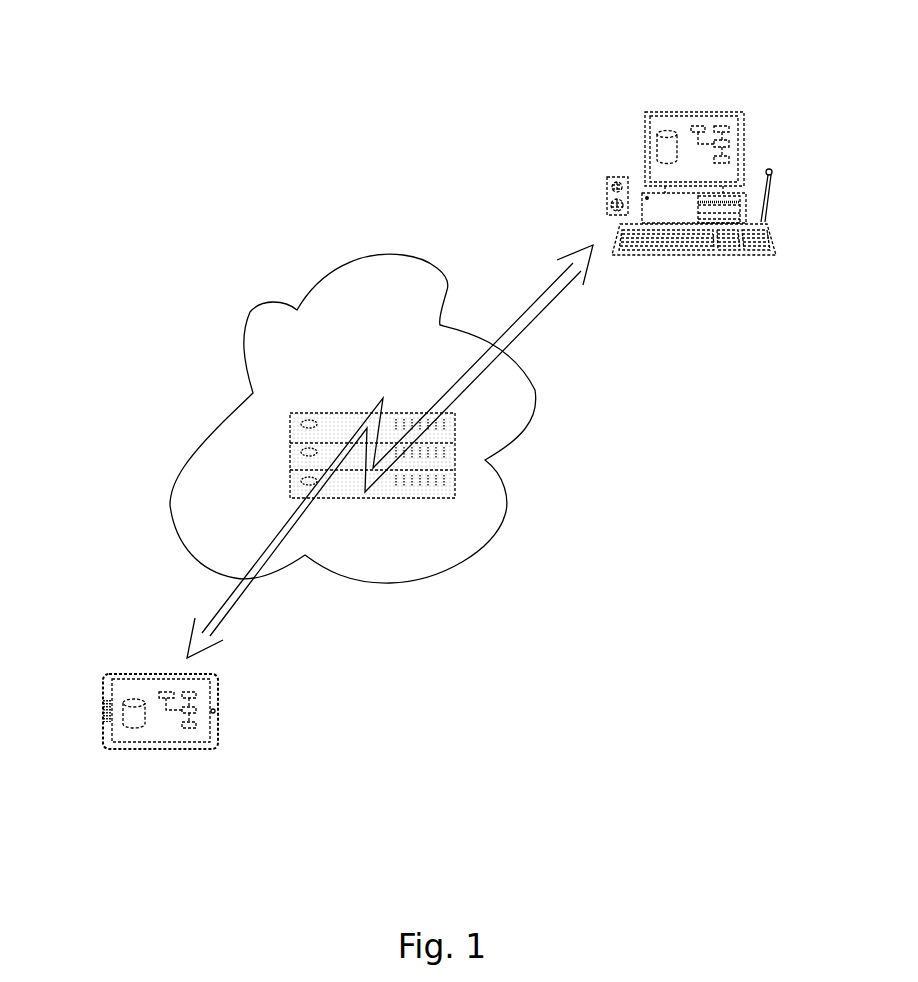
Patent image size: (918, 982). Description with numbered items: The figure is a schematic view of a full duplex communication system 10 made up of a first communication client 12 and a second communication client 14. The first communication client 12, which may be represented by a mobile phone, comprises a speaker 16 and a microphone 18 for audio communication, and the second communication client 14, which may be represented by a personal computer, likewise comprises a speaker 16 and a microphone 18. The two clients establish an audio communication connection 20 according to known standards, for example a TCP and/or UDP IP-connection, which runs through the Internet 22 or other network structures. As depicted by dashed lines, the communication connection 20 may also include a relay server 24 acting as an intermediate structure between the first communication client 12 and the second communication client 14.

The full duplex communication system 10 is at (218, 143).
The first communication client 12 is at (157, 735).
The second communication client 14 is at (690, 246).
The speaker 16 is at (612, 203).
The microphone 18 is at (773, 171).
The audio communication connection 20 is at (522, 322).
The Internet 22 is at (450, 543).
The relay server 24 is at (448, 483).